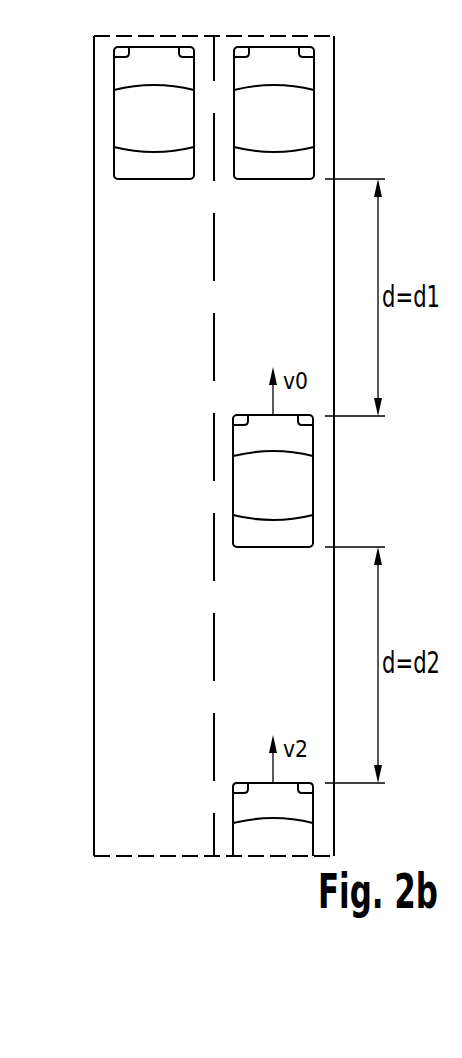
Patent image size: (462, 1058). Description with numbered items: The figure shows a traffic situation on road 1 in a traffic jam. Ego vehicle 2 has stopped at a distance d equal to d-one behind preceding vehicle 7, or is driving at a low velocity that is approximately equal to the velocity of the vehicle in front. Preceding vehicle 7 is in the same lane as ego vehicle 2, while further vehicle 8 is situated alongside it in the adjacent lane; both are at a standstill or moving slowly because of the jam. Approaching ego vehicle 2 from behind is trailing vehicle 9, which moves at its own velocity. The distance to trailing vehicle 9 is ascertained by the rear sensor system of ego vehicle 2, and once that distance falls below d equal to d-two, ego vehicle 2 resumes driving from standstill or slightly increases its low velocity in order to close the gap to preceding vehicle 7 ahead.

The road 1 is at (94, 723).
The ego vehicle 2 is at (313, 488).
The preceding vehicle 7 is at (314, 73).
The further vehicle 8 is at (114, 73).
The trailing vehicle 9 is at (313, 815).